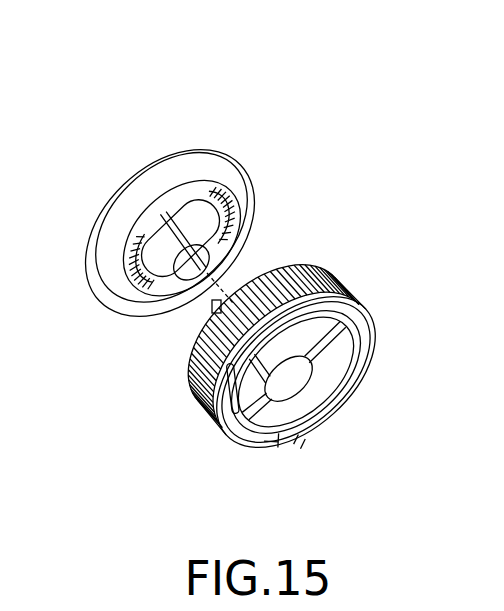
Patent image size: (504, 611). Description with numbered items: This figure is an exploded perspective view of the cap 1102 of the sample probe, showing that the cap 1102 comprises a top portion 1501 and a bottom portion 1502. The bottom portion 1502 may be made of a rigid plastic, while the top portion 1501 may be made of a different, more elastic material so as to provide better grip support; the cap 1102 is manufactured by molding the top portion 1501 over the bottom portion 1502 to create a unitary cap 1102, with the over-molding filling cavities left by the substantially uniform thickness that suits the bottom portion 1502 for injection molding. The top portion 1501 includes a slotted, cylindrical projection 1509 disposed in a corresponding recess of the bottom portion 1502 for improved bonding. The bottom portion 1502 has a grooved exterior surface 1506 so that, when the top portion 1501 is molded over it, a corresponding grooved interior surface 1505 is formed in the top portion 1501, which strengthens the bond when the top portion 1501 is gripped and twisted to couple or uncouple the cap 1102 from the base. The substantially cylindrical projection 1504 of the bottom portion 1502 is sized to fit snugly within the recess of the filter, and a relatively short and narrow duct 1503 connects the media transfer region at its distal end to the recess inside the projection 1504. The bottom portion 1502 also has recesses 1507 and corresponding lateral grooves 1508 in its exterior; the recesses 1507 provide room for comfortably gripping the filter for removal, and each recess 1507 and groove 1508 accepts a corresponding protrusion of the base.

The cap 1102 is at (204, 43).
The top portion 1501 is at (130, 207).
The bottom portion 1502 is at (325, 300).
The duct 1503 is at (318, 360).
The substantially cylindrical projection 1504 is at (290, 416).
The grooved interior surface 1505 is at (200, 184).
The grooved exterior surface 1506 is at (322, 273).
The recesses 1507 is at (257, 442).
The lateral grooves 1508 is at (213, 403).
The slotted, cylindrical projection 1509 is at (150, 287).